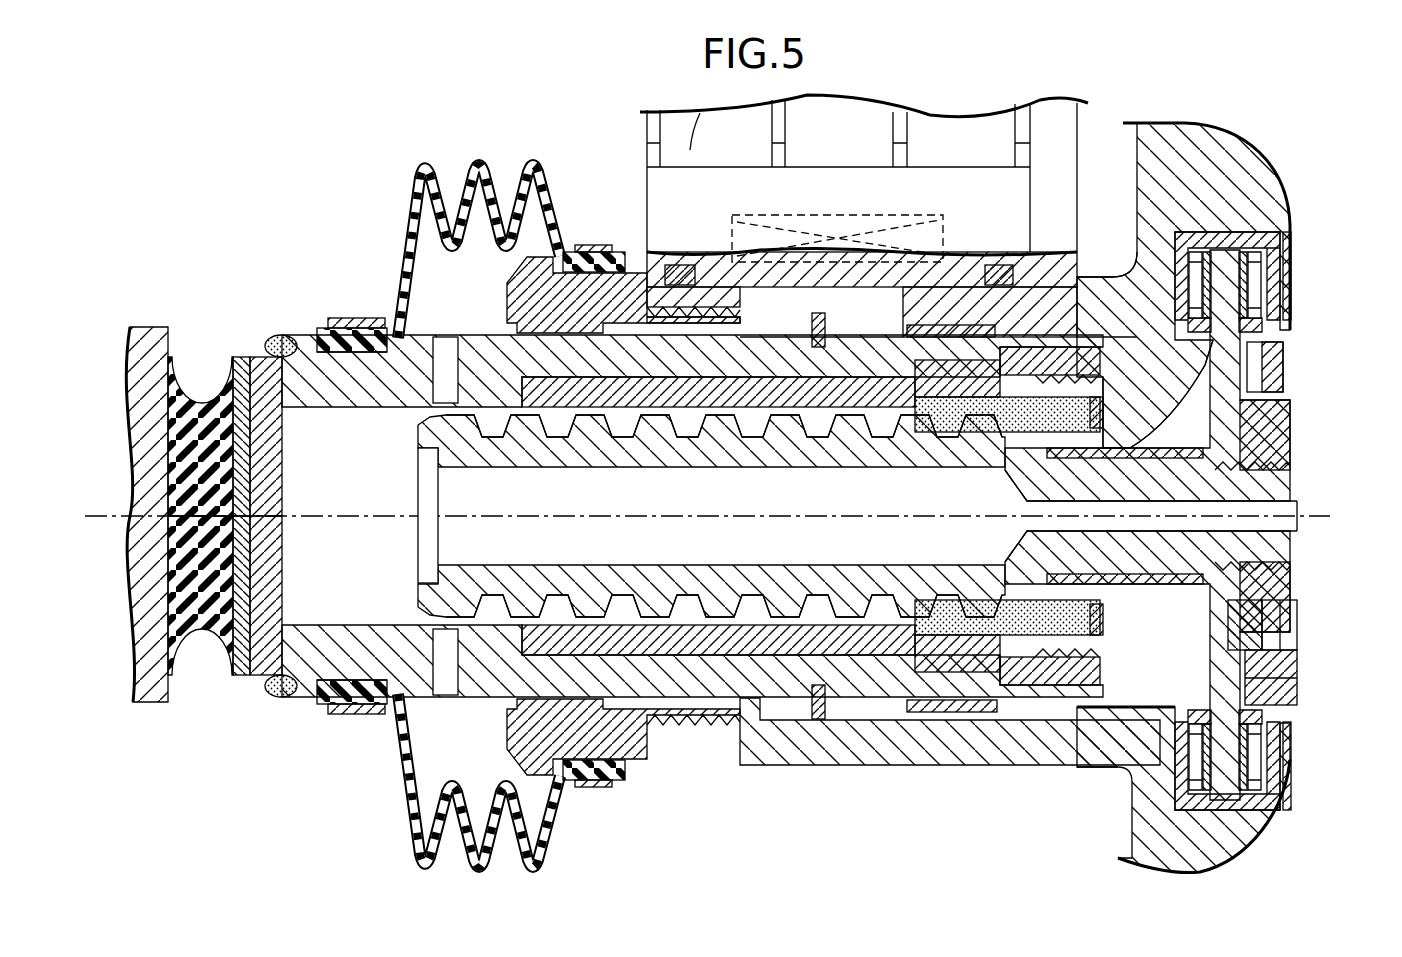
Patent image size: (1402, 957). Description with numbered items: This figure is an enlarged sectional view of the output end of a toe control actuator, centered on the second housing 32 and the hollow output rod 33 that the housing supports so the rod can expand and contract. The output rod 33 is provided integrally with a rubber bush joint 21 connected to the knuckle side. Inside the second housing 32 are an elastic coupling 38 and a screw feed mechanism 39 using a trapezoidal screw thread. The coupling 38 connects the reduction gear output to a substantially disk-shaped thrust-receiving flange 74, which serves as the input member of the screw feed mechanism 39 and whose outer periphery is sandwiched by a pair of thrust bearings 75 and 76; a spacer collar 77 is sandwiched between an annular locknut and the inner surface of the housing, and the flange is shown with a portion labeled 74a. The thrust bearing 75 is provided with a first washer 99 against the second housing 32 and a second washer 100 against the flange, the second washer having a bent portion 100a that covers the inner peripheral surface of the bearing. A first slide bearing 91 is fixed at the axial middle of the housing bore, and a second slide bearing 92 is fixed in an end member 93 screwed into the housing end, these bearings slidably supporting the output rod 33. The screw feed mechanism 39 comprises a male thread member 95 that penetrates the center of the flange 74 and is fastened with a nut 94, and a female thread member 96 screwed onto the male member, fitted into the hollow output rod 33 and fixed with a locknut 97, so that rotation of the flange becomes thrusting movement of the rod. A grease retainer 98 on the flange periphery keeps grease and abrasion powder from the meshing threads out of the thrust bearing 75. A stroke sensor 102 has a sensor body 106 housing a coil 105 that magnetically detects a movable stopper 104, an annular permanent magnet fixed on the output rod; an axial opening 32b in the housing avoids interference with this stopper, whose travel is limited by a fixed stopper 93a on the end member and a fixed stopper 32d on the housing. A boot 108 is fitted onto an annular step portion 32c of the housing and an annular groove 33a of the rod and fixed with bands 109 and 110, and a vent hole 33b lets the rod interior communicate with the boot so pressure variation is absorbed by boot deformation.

The rubber bush joint 21 is at (172, 326).
The second housing 32 is at (893, 768).
The opening 32b is at (880, 326).
The annular step portion 32c is at (640, 262).
The fixed stopper 32d is at (878, 320).
The output rod 33 is at (445, 703).
The annular groove 33a is at (366, 352).
The vent hole 33b is at (437, 352).
The elastic coupling 38 is at (1305, 664).
The screw feed mechanism 39 is at (771, 668).
The thrust-receiving flange 74 is at (1118, 400).
The bracket flange 74a is at (1298, 692).
The thrust bearing 75 is at (1197, 262).
The thrust bearing 76 is at (1255, 252).
The spacer collar 77 is at (1226, 245).
The first slide bearing 91 is at (960, 713).
The second slide bearing 92 is at (509, 738).
The end member 93 is at (505, 283).
The fixed stopper 93a is at (746, 320).
The nut 94 is at (1285, 445).
The male thread member 95 is at (725, 592).
The female thread member 96 is at (713, 447).
The locknut 97 is at (960, 405).
The grease retainer 98 is at (1106, 640).
The first washer 99 is at (1168, 232).
The second washer 100 is at (1142, 283).
The bent portion 100a is at (1265, 362).
The stroke sensor 102 is at (1103, 126).
The movable stopper 104 is at (816, 313).
The coil 105 is at (932, 215).
The sensor body 106 is at (946, 126).
The boot 108 is at (478, 192).
The band 109 is at (593, 246).
The band 110 is at (358, 325).